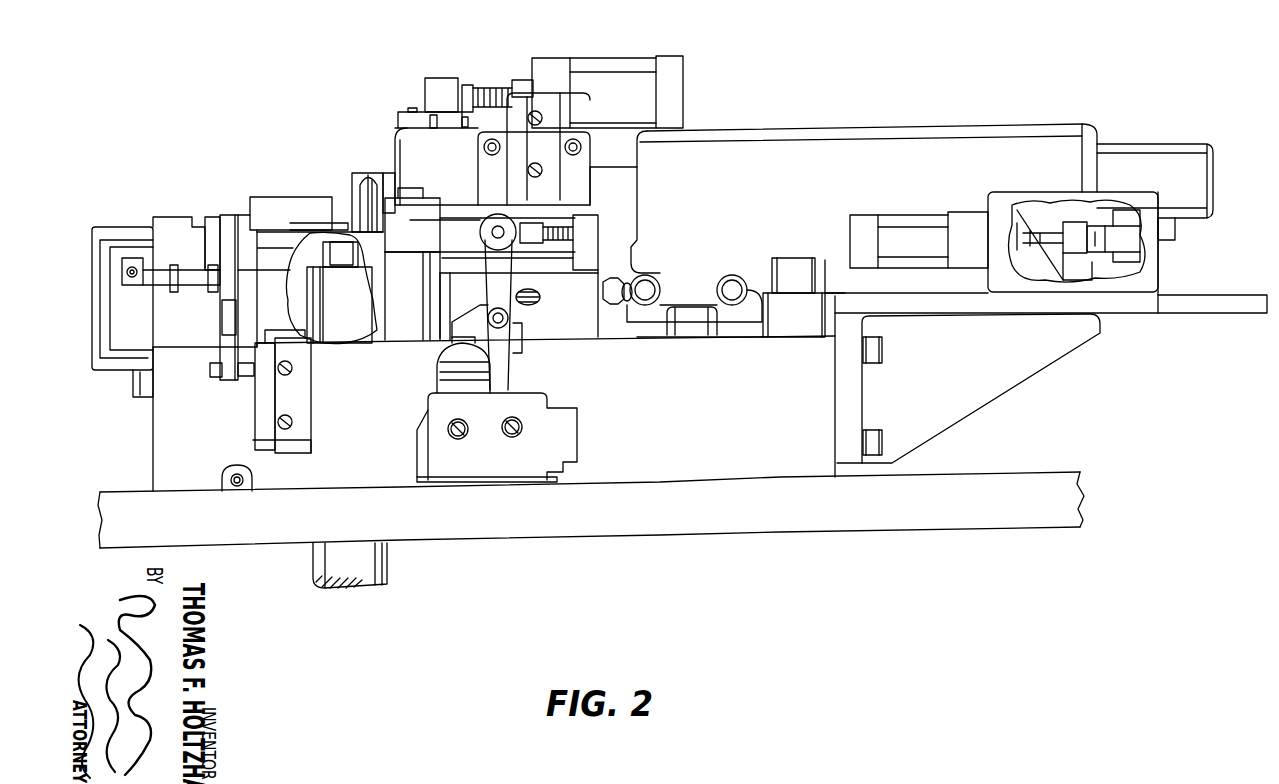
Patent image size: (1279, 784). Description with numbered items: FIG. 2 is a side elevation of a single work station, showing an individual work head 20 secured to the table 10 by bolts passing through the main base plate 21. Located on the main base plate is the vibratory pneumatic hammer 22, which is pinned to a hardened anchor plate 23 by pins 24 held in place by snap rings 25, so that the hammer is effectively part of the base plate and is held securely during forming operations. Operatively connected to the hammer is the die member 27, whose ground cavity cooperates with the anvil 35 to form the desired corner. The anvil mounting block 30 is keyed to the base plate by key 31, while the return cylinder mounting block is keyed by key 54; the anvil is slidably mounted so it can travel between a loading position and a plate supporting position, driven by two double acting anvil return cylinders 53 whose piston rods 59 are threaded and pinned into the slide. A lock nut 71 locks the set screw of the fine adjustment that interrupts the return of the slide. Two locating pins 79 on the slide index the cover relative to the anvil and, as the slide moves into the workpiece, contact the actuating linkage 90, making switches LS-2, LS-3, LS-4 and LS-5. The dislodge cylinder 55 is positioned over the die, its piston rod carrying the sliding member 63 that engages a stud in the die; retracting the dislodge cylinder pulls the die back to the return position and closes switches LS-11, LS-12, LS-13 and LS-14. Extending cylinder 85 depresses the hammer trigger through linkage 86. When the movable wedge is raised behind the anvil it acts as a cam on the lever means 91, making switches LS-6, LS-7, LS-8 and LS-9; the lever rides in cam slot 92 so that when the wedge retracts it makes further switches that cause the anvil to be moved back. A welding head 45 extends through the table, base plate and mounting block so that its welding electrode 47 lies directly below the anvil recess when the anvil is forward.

The table 10 is at (1063, 512).
The individual work head 20 is at (1058, 405).
The main base plate 21 is at (779, 473).
The vibratory pneumatic hammer 22 is at (926, 128).
The anchor plate 23 is at (761, 290).
The pins 24 is at (651, 287).
The snap rings 25 is at (740, 278).
The die member 27 is at (386, 180).
The anvil mounting block 30 is at (166, 227).
The key 31 is at (316, 378).
The anvil 35 is at (270, 205).
The welding head 45 is at (385, 573).
The welding electrode 47 is at (338, 220).
The anvil return cylinders 53 is at (598, 252).
The key 54 is at (519, 318).
The dislodge cylinder 55 is at (668, 65).
The piston rods 59 is at (497, 86).
The sliding member 63 is at (440, 92).
The lock nut 71 is at (697, 347).
The locating pins 79 is at (365, 192).
The cylinder 85 is at (950, 218).
The linkage 86 is at (1130, 267).
The actuating linkage 90 is at (446, 190).
The lever means 91 is at (216, 321).
The cam slot 92 is at (228, 219).
The limit switch LS-2 is at (531, 482).
The limit switch LS-3 is at (531, 482).
The limit switch LS-4 is at (531, 482).
The limit switch LS-5 is at (530, 462).
The limit switch LS-6 is at (316, 378).
The limit switch LS-7 is at (316, 378).
The limit switch LS-8 is at (316, 378).
The limit switch LS-9 is at (280, 333).
The limit switch LS-11 is at (597, 118).
The limit switch LS-12 is at (597, 118).
The limit switch LS-13 is at (597, 118).
The limit switch LS-14 is at (552, 140).